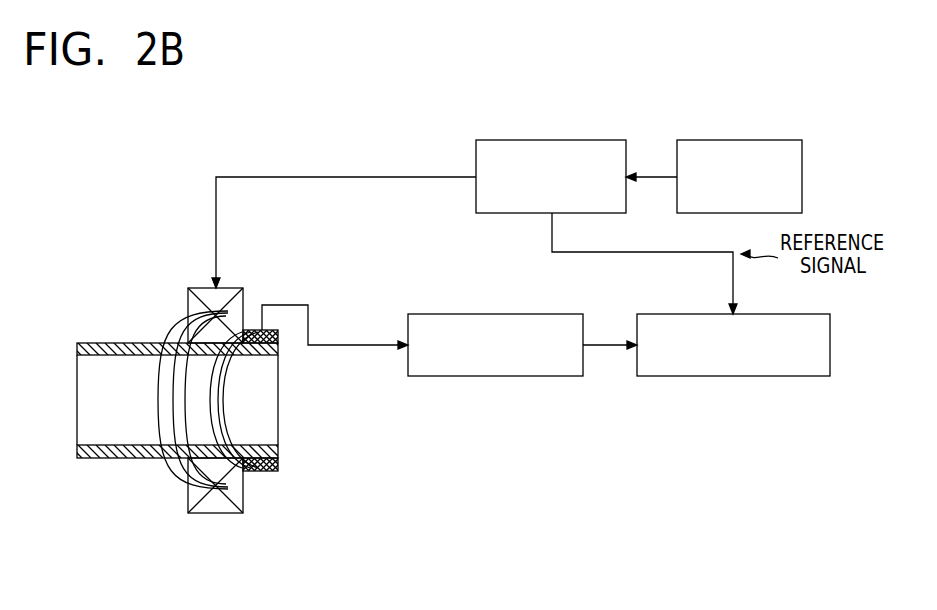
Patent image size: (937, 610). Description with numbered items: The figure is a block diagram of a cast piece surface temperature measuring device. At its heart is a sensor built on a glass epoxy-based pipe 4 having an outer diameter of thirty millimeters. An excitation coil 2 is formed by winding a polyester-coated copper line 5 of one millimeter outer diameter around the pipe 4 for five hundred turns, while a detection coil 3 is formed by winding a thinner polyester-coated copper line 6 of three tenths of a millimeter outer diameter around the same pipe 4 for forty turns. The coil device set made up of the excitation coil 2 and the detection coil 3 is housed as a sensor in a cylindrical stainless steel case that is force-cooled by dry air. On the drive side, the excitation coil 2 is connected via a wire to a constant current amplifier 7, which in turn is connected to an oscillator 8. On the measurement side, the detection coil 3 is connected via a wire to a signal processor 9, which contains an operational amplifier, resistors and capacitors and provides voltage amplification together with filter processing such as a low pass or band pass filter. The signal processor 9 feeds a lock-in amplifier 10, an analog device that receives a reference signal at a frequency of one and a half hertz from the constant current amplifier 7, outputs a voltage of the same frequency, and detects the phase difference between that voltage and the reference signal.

The excitation coil 2 is at (225, 515).
The detection coil 3 is at (262, 473).
The glass epoxy-based pipe 4 is at (128, 452).
The polyester-coated copper line 5 is at (162, 367).
The polyester-coated copper line 6 is at (223, 402).
The constant current amplifier 7 is at (597, 140).
The oscillator 8 is at (770, 140).
The signal processor 9 is at (540, 314).
The lock-in amplifier 10 is at (793, 314).